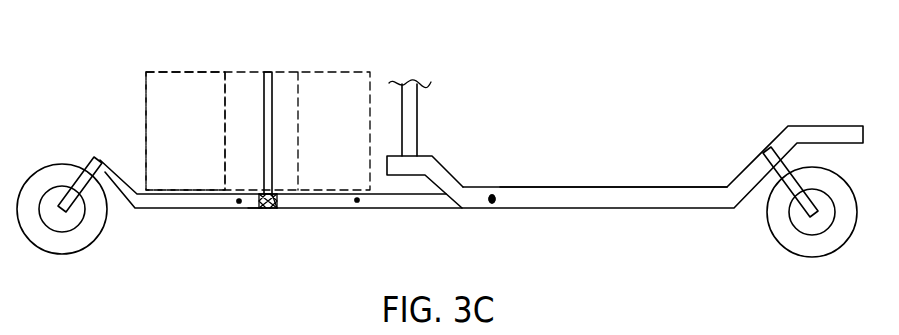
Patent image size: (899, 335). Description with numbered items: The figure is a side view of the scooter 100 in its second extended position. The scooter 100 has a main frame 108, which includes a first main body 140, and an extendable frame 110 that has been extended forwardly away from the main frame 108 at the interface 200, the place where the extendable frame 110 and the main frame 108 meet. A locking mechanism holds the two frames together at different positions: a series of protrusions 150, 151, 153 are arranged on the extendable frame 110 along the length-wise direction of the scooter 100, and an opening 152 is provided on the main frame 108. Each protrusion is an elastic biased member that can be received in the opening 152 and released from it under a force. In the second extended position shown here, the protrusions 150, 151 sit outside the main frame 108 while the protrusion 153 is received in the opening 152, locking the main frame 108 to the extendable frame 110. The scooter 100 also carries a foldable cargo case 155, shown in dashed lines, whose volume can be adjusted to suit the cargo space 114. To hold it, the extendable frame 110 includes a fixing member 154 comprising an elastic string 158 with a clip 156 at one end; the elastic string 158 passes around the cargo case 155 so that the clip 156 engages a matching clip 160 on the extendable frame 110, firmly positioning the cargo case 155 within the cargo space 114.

The scooter 100 is at (668, 77).
The main frame 108 is at (661, 212).
The extendable frame 110 is at (404, 212).
The cargo space 114 is at (129, 144).
The first main body 140 is at (605, 193).
The protrusion 150 is at (237, 203).
The protrusion 151 is at (356, 203).
The opening 152 is at (492, 204).
The protrusion 153 is at (494, 196).
The fixing member 154 is at (246, 212).
The foldable cargo case 155 is at (178, 72).
The clip 156 is at (262, 208).
The elastic string 158 is at (273, 105).
The matching clip 160 is at (274, 206).
The interface 200 is at (467, 203).